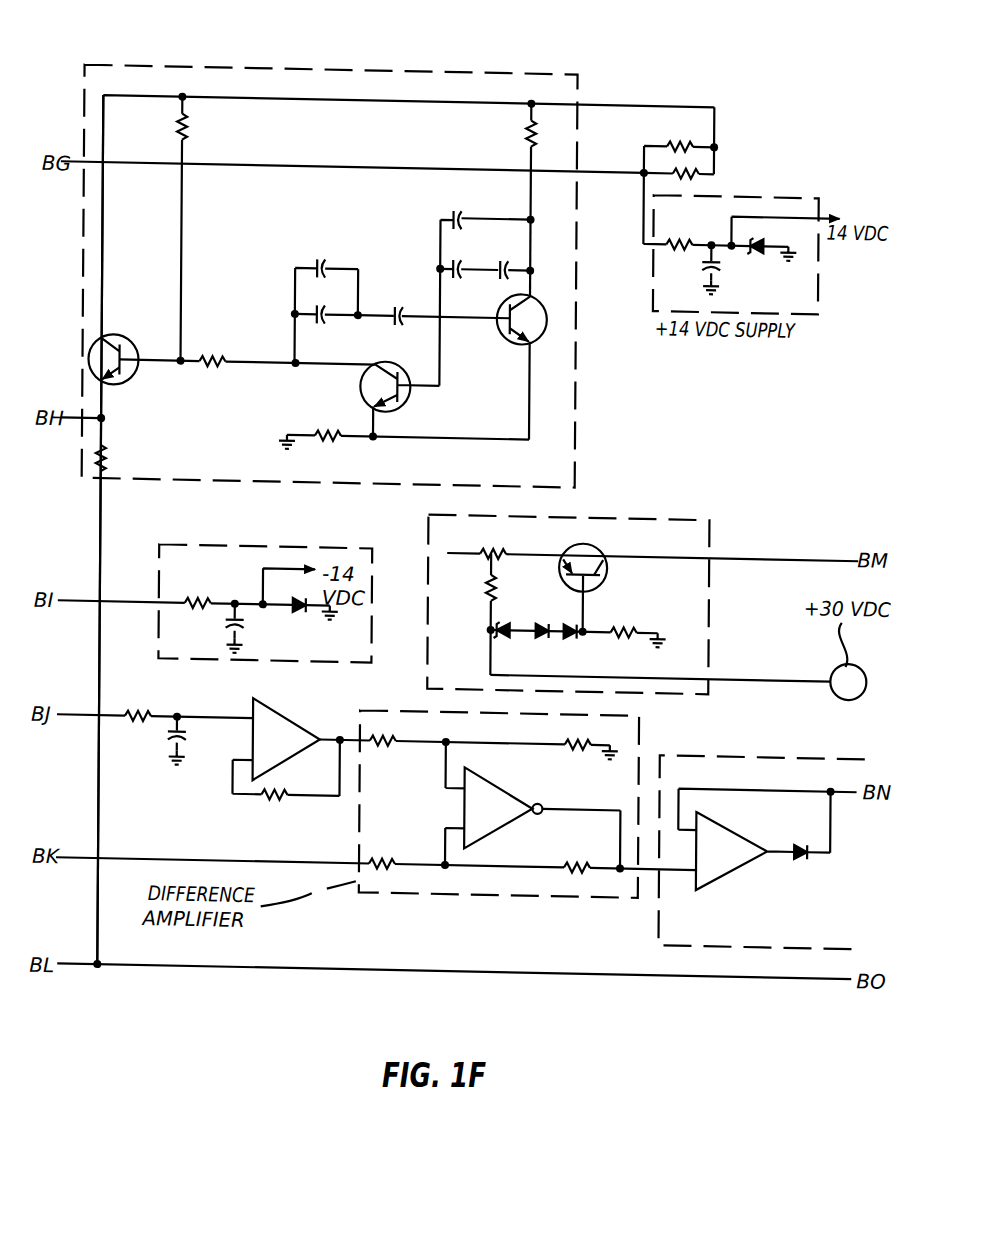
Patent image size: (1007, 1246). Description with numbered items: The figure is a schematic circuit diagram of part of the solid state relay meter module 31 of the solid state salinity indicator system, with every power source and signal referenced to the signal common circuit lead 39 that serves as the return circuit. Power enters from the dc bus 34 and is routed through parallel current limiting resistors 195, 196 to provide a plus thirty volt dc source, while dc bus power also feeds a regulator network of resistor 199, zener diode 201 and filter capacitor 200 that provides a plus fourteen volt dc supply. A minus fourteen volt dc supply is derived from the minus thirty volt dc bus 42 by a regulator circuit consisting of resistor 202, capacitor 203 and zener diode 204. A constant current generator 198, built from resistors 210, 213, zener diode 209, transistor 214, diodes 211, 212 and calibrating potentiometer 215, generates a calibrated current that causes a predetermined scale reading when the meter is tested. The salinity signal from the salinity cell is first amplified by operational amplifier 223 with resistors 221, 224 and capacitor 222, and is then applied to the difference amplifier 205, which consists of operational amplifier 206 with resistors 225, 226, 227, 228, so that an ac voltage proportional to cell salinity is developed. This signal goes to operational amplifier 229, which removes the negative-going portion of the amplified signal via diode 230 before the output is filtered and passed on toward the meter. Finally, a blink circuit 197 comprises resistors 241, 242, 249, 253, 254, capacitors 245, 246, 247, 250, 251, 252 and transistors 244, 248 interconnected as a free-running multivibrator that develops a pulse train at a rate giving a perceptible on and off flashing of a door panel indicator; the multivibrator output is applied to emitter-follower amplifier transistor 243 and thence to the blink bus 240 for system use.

The solid state relay meter module 31 is at (405, 491).
The dc bus 34 is at (633, 161).
The signal common circuit lead 39 is at (451, 958).
The −30 vdc bus 42 is at (128, 596).
The current limiting resistor 195 is at (681, 128).
The current limiting resistor 196 is at (704, 164).
The blink circuit 197 is at (329, 290).
The constant current generator 198 is at (717, 525).
The resistor 199 is at (684, 226).
The filter capacitor 200 is at (703, 258).
The zener diode 201 is at (760, 246).
The resistor 202 is at (199, 596).
The capacitor 203 is at (229, 623).
The zener diode 204 is at (302, 609).
The difference amplifier 205 is at (582, 887).
The operational amplifier 206 is at (468, 786).
The zener diode 209 is at (510, 626).
The resistor 210 is at (502, 581).
The diode 211 is at (547, 613).
The diode 212 is at (577, 627).
The resistor 213 is at (631, 614).
The transistor 214 is at (616, 561).
The calibrating potentiometer 215 is at (495, 539).
The resistor 221 is at (139, 709).
The capacitor 222 is at (171, 735).
The operational amplifier 223 is at (323, 728).
The resistor 224 is at (290, 787).
The resistor 225 is at (390, 739).
The resistor 226 is at (588, 739).
The resistor 227 is at (392, 850).
The resistor 228 is at (582, 848).
The operational amplifier 229 is at (751, 821).
The diode 230 is at (798, 846).
The blink bus 240 is at (110, 414).
The resistor 241 is at (527, 124).
The resistor 242 is at (190, 124).
The emitter-follower amplifier transistor 243 is at (142, 344).
The transistor 244 is at (505, 325).
The capacitor 245 is at (508, 249).
The capacitor 246 is at (463, 204).
The capacitor 247 is at (462, 251).
The transistor 248 is at (400, 358).
The resistor 249 is at (219, 347).
The capacitor 250 is at (326, 320).
The capacitor 251 is at (326, 255).
The capacitor 252 is at (401, 298).
The resistor 253 is at (332, 425).
The resistor 254 is at (114, 457).